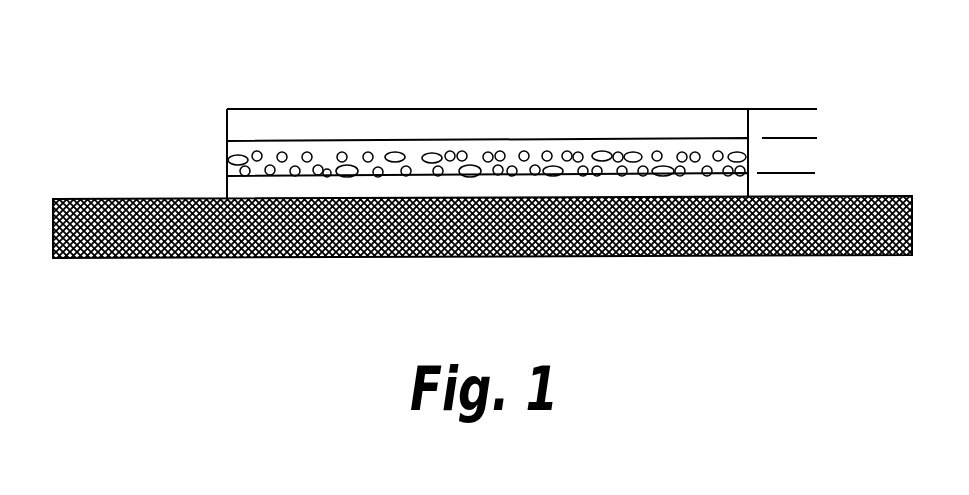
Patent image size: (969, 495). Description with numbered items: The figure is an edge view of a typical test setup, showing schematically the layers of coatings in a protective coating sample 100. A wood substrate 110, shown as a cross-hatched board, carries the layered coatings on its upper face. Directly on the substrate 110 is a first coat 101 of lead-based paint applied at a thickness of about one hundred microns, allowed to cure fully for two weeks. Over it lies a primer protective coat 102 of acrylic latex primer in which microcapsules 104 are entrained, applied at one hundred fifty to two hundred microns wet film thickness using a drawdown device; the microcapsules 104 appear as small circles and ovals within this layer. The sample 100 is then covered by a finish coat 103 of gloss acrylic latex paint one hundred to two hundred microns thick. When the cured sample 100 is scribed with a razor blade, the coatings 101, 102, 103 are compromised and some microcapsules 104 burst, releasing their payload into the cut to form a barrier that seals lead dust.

The protective coating samples 100 is at (152, 22).
The first coat of lead-based paint 101 is at (228, 197).
The primer protective coat 102 is at (476, 148).
The finish coat of gloss acrylic latex paint 103 is at (285, 123).
The microcapsules 104 is at (598, 147).
The wood substrate 110 is at (390, 258).